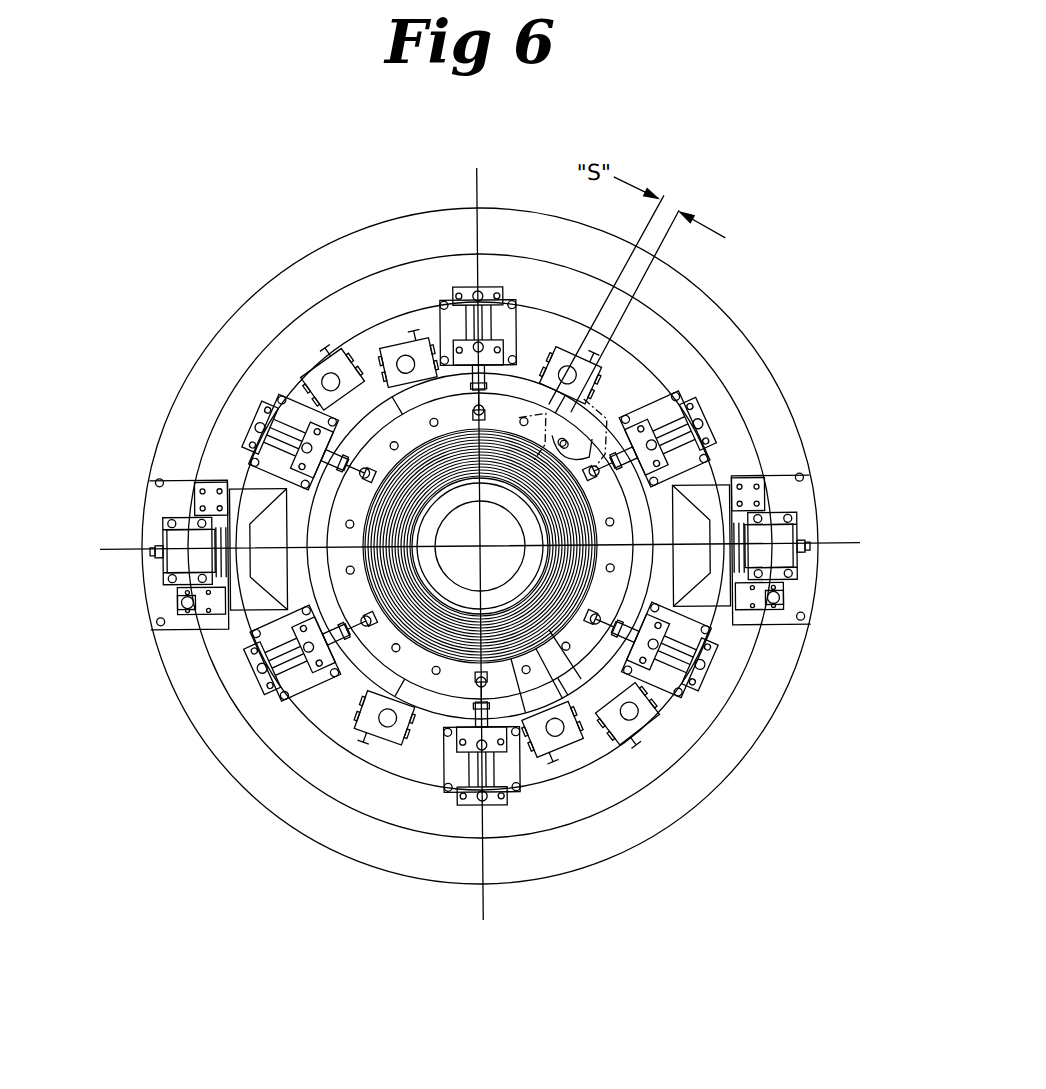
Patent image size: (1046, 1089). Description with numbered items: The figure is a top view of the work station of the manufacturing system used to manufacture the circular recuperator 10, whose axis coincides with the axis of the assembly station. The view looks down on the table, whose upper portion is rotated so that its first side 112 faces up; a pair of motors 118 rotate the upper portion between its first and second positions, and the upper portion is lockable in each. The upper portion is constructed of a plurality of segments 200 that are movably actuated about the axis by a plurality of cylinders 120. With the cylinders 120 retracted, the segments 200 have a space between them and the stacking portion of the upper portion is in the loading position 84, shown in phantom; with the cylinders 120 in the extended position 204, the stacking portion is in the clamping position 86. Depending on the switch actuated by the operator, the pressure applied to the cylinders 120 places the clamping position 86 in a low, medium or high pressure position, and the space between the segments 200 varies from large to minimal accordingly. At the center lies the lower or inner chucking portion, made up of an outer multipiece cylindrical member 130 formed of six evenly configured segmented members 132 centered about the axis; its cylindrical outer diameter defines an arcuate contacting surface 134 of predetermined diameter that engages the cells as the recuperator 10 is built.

The recuperator 10 is at (655, 806).
The loading position 84 is at (625, 380).
The clamping position 86 is at (745, 433).
The first side 112 is at (270, 735).
The motors 118 is at (772, 517).
The cylinders 120 is at (303, 387).
The multipiece cylindrical member 130 is at (672, 688).
The segmented members 132 is at (640, 714).
The contacting surface 134 is at (560, 730).
The segments 200 is at (445, 718).
The extended position 204 is at (287, 503).